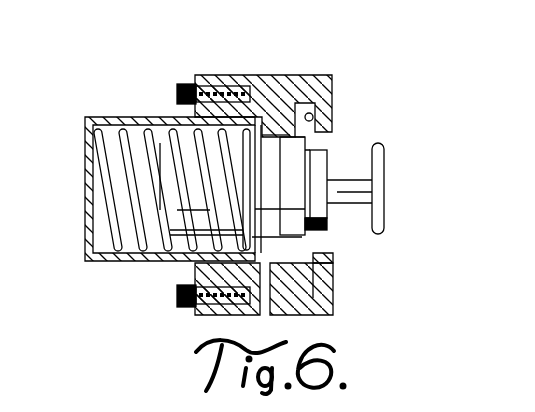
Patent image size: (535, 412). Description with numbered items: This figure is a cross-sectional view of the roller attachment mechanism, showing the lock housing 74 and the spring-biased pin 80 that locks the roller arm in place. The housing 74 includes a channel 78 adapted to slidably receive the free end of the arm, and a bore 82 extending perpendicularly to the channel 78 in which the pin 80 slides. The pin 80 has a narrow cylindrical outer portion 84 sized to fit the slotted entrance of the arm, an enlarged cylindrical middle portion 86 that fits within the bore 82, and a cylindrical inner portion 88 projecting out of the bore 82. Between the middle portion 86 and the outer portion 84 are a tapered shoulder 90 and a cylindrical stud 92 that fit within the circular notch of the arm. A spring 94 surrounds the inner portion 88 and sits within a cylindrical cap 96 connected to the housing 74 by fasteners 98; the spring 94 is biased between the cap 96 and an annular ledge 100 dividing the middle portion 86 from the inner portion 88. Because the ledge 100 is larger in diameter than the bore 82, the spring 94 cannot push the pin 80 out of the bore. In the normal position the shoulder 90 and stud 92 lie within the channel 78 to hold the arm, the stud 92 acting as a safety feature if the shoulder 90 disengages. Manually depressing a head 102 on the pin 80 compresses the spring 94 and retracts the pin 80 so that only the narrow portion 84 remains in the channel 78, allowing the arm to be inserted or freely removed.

The housing 74 is at (234, 75).
The channel 78 is at (314, 118).
The pin 80 is at (370, 213).
The bore 82 is at (266, 138).
The narrow cylindrical outer portion 84 is at (350, 180).
The enlarged cylindrical middle portion 86 is at (333, 299).
The cylindrical inner portion 88 is at (180, 237).
The tapered shoulder 90 is at (308, 232).
The cylindrical stud 92 is at (327, 226).
The spring 94 is at (106, 188).
The cylindrical cap 96 is at (86, 238).
The fasteners 98 is at (176, 92).
The annular ledge 100 is at (262, 193).
The head 102 is at (372, 181).